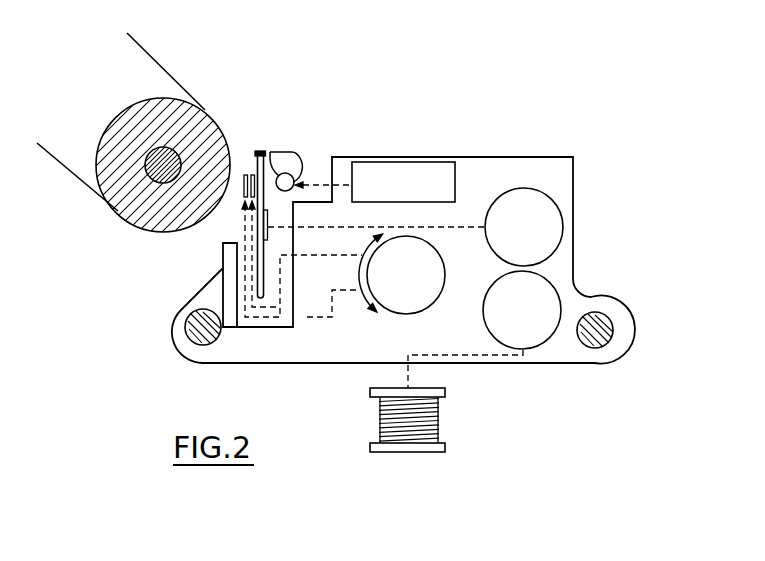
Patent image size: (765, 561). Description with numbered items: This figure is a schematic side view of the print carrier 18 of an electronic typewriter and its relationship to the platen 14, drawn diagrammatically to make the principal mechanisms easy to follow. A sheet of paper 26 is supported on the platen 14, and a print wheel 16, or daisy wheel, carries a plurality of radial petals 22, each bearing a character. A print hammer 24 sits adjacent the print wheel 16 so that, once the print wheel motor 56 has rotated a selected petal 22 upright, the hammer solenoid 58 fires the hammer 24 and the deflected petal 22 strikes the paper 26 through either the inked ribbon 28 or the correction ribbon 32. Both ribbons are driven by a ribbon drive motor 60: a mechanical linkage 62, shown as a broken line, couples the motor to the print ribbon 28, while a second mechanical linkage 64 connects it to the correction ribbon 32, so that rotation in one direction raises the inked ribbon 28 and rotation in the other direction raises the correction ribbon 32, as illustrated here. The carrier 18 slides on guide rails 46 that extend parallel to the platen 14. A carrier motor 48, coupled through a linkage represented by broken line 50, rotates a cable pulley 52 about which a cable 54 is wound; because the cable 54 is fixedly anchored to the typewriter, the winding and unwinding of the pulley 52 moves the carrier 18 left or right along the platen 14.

The platen 14 is at (132, 107).
The sheet of paper 26 is at (183, 83).
The inked ribbon 28 is at (252, 167).
The correction ribbon 32 is at (243, 175).
The print wheel 16 is at (260, 152).
The print hammer 24 is at (297, 152).
The radial petal 22 is at (265, 185).
The carrier 18 is at (522, 157).
The hammer solenoid 58 is at (392, 162).
The print wheel motor 56 is at (552, 198).
The ribbon drive motor 60 is at (395, 315).
The mechanical linkage 62 is at (347, 253).
The mechanical linkage 64 is at (307, 317).
The carrier motor 48 is at (553, 338).
The broken line 50 is at (462, 352).
The guide rails 46 is at (203, 310).
The cable pulley 52 is at (447, 392).
The cable 54 is at (445, 413).